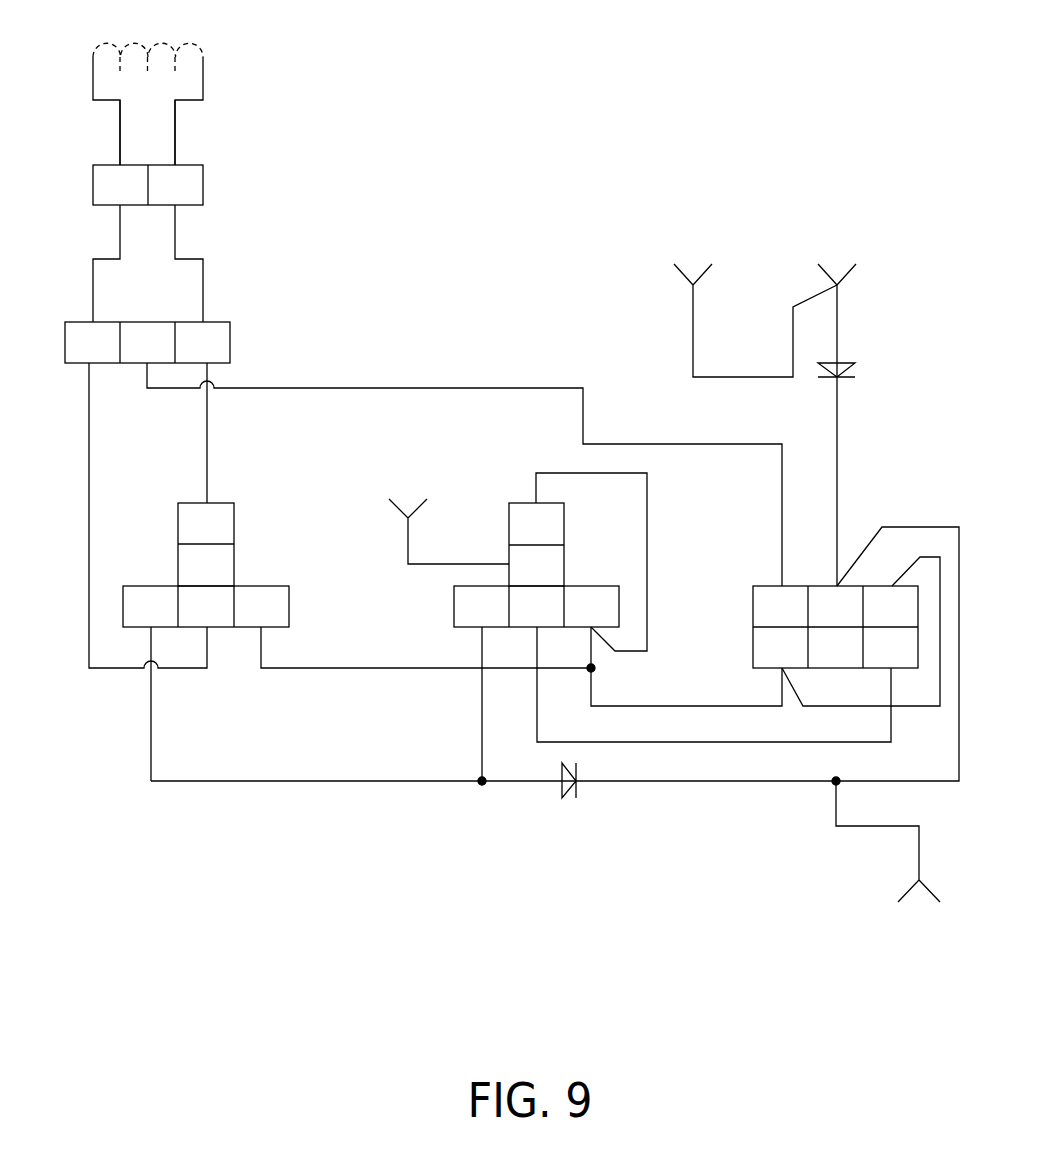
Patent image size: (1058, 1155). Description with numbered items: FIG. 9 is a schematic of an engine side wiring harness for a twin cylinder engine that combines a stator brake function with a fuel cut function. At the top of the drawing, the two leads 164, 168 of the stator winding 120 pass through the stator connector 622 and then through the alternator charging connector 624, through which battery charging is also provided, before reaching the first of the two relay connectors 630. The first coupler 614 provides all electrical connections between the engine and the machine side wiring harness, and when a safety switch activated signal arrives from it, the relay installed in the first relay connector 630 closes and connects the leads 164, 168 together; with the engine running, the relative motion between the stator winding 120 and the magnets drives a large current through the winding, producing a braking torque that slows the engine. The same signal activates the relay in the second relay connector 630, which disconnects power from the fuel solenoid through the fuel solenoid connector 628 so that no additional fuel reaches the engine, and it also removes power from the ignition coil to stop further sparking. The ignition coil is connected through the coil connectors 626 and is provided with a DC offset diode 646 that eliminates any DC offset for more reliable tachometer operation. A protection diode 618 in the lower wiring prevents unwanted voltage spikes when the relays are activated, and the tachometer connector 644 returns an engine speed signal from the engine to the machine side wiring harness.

The stator winding 120 is at (148, 90).
The lead 164 is at (120, 138).
The lead 168 is at (175, 138).
The stator connector 622 is at (92, 183).
The alternator charging connector 624 is at (65, 344).
The relay connectors 630 is at (234, 570).
The fuel solenoid connector 628 is at (448, 517).
The coil connectors 626 is at (764, 411).
The DC offset diode 646 is at (843, 378).
The first coupler 614 is at (753, 605).
The protection diode 618 is at (578, 790).
The tachometer connector 644 is at (888, 858).